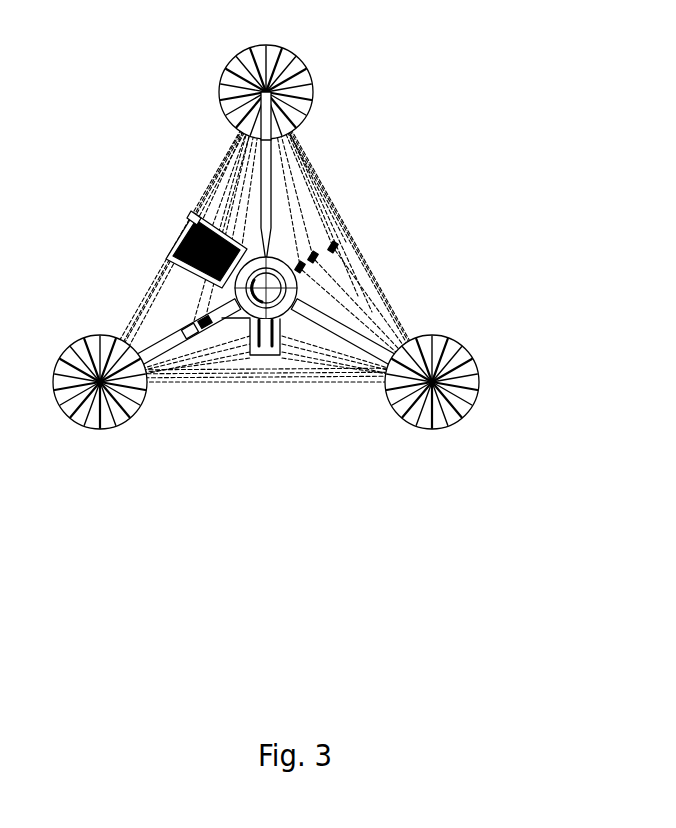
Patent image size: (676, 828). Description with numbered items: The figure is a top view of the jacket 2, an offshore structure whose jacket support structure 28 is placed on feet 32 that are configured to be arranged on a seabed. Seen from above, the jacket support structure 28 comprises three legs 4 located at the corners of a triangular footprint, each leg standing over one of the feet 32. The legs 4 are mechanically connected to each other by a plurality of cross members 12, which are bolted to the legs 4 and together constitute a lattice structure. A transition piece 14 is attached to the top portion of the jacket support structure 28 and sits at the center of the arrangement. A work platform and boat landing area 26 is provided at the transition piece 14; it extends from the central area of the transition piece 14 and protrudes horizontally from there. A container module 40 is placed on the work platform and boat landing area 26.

The jacket 2 is at (282, 217).
The legs 4 is at (280, 156).
The cross members 12 is at (220, 197).
The transition piece 14 is at (297, 318).
The work platform and boat landing area 26 is at (175, 250).
The jacket support structure 28 is at (357, 263).
The feet 32 is at (218, 82).
The container module 40 is at (192, 216).